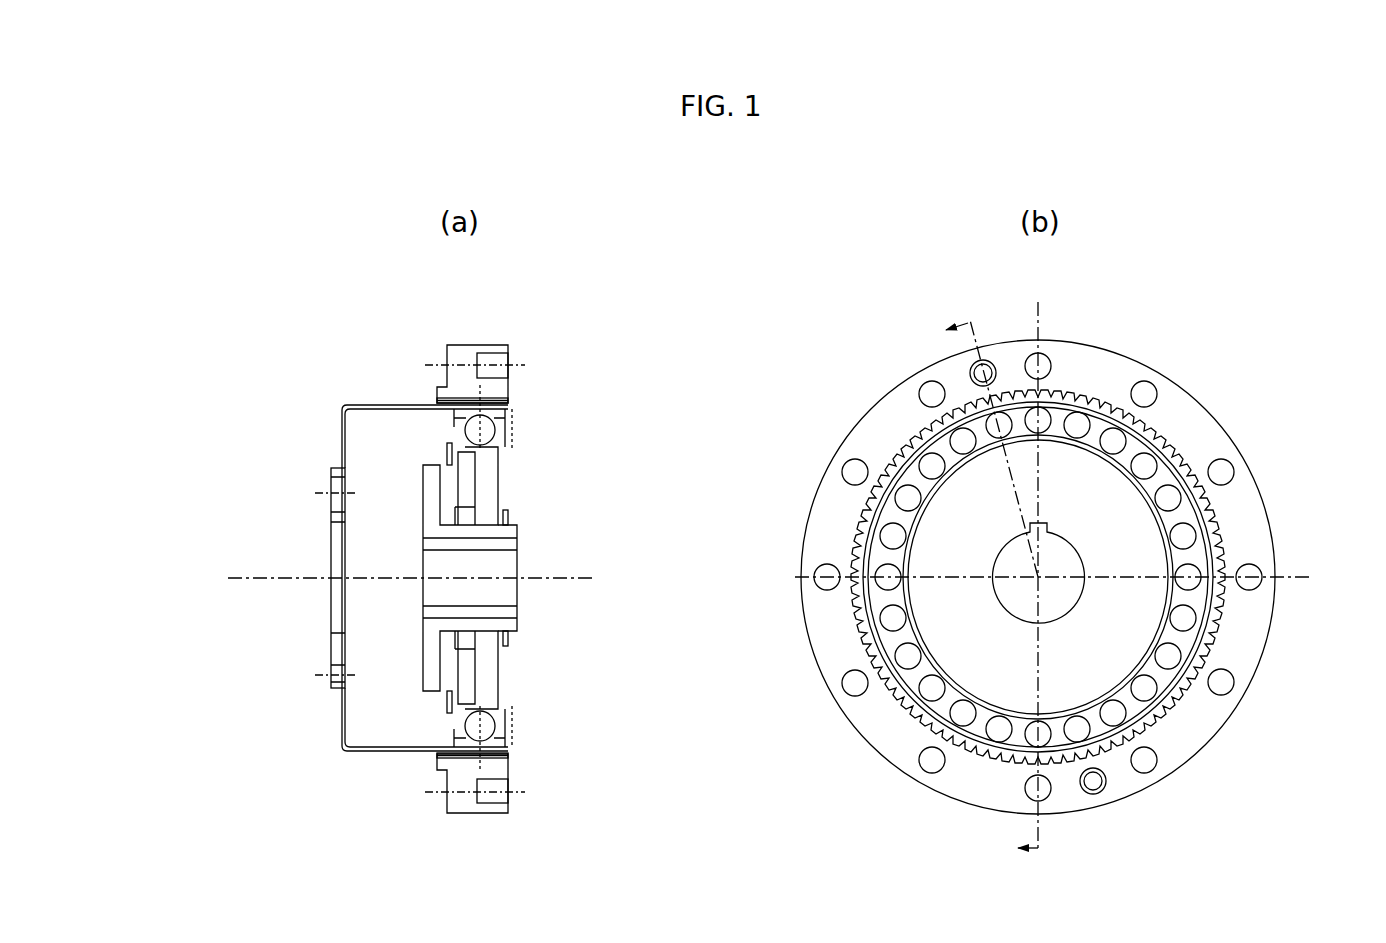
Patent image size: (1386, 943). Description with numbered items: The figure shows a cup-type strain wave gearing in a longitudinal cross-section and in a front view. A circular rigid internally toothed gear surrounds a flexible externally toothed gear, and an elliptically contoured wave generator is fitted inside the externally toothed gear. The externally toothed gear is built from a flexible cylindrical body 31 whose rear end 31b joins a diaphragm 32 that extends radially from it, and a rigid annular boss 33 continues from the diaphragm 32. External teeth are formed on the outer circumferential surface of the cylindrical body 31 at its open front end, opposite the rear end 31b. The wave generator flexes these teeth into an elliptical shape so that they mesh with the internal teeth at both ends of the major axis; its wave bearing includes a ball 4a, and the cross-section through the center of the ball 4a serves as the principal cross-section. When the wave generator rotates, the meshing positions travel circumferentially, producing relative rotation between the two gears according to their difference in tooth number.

The ball 4a is at (497, 713).
The flexible cylindrical body 31 is at (383, 755).
The rear end 31b is at (343, 752).
The diaphragm 32 is at (338, 718).
The rigid annular boss 33 is at (330, 638).